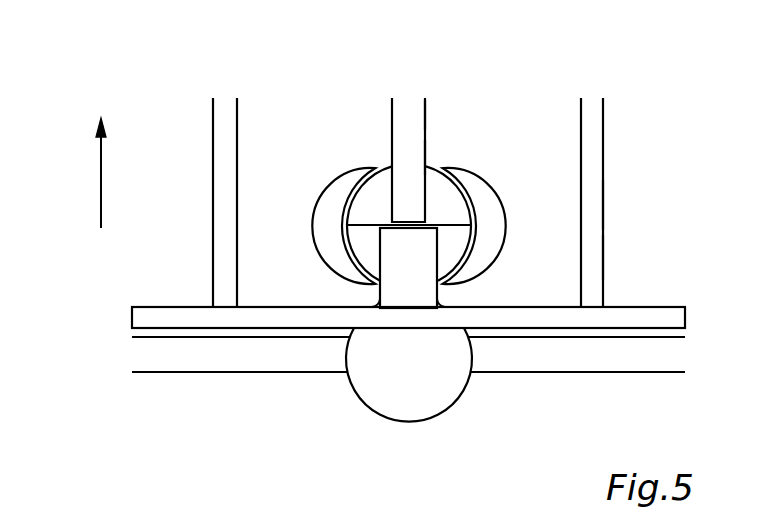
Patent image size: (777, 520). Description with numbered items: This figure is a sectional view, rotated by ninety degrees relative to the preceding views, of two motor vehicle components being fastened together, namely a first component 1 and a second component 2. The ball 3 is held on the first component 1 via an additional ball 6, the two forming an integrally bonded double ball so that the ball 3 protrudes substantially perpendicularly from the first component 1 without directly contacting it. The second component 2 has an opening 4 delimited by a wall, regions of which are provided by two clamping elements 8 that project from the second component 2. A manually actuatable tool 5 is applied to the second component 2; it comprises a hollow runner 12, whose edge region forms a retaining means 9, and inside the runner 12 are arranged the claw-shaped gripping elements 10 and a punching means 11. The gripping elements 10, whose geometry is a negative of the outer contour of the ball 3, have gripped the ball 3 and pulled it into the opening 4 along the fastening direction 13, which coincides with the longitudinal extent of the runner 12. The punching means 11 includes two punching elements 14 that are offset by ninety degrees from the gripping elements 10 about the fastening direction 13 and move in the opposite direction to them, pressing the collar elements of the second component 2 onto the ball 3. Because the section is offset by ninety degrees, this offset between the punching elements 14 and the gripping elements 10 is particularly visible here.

The first component 1 is at (540, 360).
The second component 2 is at (620, 315).
The ball 3 is at (447, 266).
The opening 4 is at (377, 118).
The tool 5 is at (652, 121).
The additional ball 6 is at (423, 407).
The clamping elements 8 is at (388, 289).
The retaining means 9 is at (595, 256).
The gripping elements 10 is at (343, 183).
The punching means 11 is at (414, 158).
The runner 12 is at (597, 205).
The fastening direction 13 is at (104, 186).
The punching elements 14 is at (414, 114).